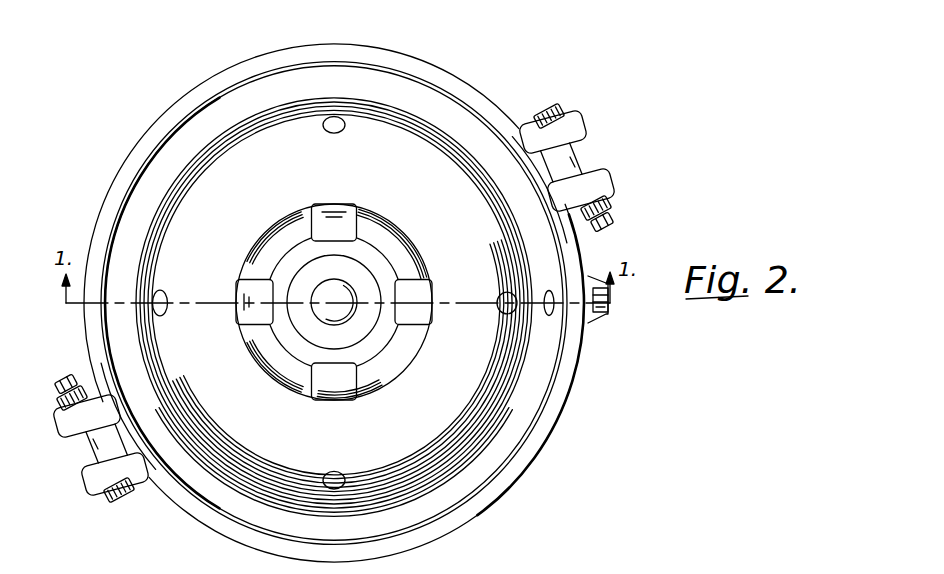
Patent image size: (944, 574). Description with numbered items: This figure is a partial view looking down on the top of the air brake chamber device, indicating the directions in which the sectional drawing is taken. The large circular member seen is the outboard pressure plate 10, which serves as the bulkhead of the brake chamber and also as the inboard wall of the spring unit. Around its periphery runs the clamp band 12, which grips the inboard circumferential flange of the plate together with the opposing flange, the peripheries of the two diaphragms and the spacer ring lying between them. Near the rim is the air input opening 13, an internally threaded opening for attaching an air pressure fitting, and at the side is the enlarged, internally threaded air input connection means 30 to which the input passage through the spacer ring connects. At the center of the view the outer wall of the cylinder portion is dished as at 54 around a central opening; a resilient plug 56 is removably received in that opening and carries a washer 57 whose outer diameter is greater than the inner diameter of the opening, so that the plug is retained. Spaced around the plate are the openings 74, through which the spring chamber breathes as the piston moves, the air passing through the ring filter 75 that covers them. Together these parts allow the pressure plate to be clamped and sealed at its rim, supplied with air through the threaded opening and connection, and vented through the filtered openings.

The outboard pressure plate 10 is at (551, 380).
The clamp band 12 is at (438, 68).
The air input opening 13 is at (549, 290).
The air input connection means 30 is at (605, 314).
The dished portion 54 is at (270, 370).
The resilient plug 56 is at (349, 268).
The washer 57 is at (355, 331).
The openings 74 is at (334, 115).
The ring filter 75 is at (447, 160).